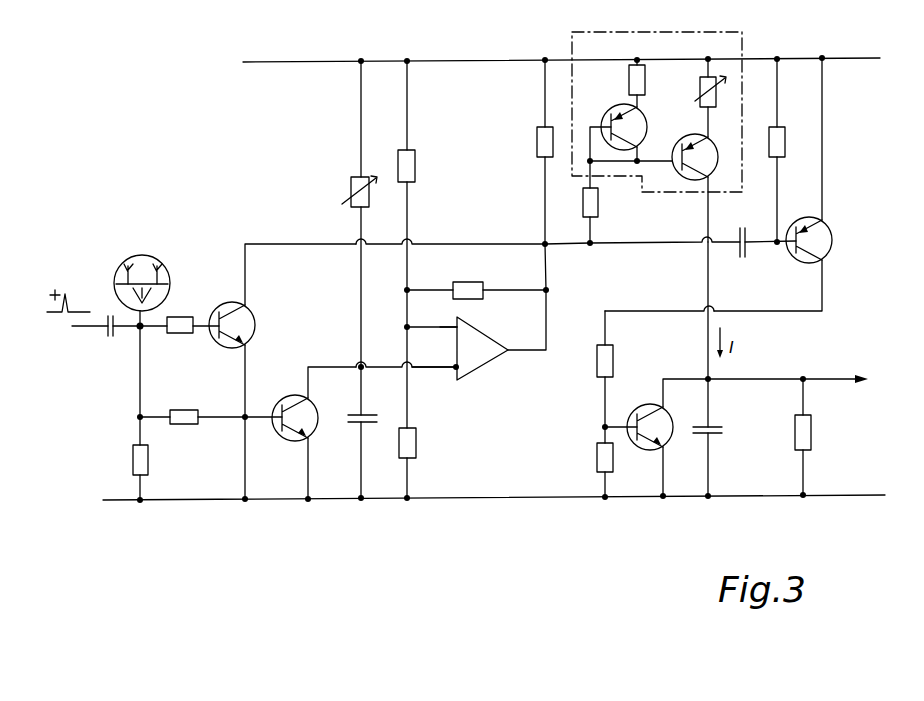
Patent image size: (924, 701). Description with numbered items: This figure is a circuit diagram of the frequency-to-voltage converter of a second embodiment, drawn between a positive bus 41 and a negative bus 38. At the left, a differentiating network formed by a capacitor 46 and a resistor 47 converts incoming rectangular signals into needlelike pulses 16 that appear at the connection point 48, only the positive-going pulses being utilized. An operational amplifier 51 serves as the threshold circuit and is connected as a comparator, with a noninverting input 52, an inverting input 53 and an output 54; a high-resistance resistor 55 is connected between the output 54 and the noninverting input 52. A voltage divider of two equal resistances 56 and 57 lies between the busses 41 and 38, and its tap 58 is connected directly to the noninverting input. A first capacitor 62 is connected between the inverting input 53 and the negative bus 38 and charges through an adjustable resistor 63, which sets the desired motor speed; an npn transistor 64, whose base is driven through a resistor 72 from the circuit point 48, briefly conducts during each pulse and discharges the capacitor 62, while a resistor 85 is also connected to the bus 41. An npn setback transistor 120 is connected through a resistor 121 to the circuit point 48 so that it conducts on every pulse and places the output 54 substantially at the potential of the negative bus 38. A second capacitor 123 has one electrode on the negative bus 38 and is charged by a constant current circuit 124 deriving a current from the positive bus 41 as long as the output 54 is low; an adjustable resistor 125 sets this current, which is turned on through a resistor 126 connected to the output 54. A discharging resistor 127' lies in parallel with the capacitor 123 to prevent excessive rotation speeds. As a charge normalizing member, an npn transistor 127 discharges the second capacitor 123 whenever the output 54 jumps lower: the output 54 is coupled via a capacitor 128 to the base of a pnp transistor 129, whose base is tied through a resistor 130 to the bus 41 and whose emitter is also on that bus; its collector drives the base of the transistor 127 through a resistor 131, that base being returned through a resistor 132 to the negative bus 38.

The needlelike pulses 16 is at (128, 276).
The negative bus 38 is at (508, 497).
The positive bus 41 is at (493, 60).
The capacitor 46 is at (105, 332).
The resistor 47 is at (135, 462).
The connection point 48 is at (143, 330).
The operational amplifier 51 is at (487, 358).
The noninverting input 52 is at (450, 330).
The inverting input 53 is at (438, 370).
The output 54 is at (520, 352).
The resistor 55 is at (468, 286).
The resistance 56 is at (416, 168).
The resistance 57 is at (417, 447).
The tap 58 is at (410, 327).
The first capacitor 62 is at (357, 425).
The adjustable resistor 63 is at (351, 184).
The npn transistor 64 is at (297, 400).
The resistor 72 is at (184, 424).
The resistor 85 is at (537, 145).
The setback transistor 120 is at (258, 318).
The resistor 121 is at (180, 318).
The second capacitor 123 is at (723, 430).
The constant current circuit 124 is at (654, 30).
The adjustable resistor 125 is at (697, 95).
The resistor 126 is at (598, 208).
The npn transistor 127 is at (704, 434).
The discharging resistor 127' is at (831, 437).
The capacitor 128 is at (742, 258).
The pnp transistor 129 is at (832, 240).
The resistor 130 is at (784, 140).
The resistor 131 is at (614, 358).
The resistor 132 is at (597, 460).